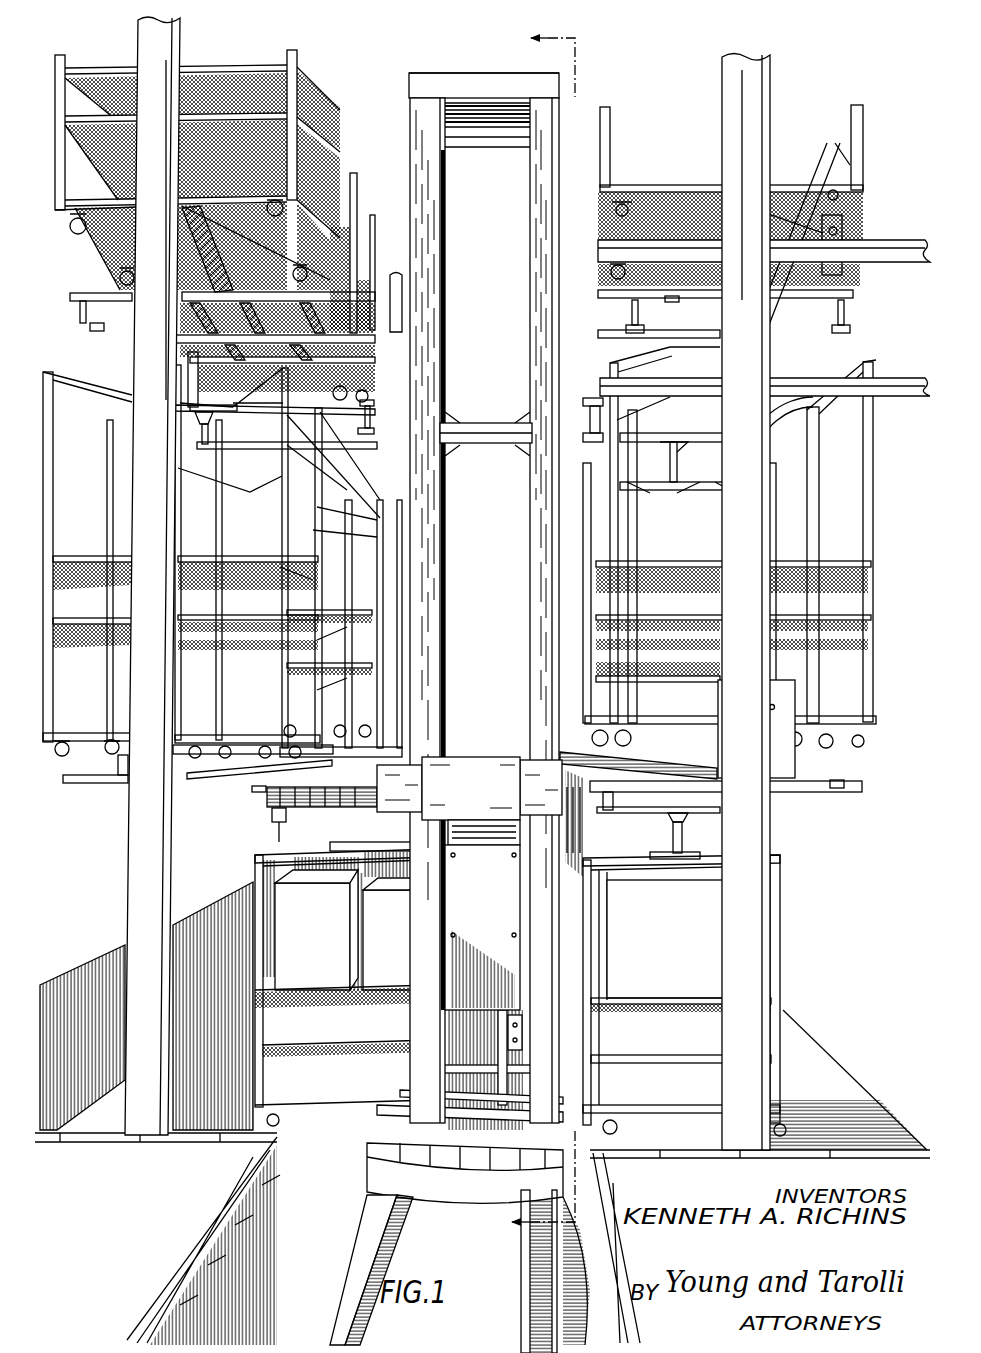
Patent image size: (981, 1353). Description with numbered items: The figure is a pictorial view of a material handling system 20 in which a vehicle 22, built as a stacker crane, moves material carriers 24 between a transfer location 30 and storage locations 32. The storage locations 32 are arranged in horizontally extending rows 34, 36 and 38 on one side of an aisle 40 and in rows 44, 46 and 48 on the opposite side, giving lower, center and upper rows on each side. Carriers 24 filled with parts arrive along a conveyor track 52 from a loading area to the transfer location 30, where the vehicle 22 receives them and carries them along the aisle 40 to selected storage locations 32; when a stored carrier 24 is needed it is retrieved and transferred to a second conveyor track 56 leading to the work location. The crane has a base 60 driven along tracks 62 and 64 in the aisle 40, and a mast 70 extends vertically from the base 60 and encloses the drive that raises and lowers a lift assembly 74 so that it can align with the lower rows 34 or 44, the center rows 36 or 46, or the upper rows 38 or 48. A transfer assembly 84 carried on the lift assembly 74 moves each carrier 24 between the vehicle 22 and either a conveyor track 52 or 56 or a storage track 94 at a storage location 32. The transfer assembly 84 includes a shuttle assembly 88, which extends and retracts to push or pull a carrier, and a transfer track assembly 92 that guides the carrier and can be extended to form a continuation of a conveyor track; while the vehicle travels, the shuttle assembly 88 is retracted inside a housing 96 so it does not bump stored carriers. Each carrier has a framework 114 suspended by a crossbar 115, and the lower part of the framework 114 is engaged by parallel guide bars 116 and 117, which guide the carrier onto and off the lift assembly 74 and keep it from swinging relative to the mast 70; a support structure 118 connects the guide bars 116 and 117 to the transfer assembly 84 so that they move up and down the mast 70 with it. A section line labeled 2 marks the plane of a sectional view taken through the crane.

The section line 2- 2 is at (530, 629).
The material handling system 20 is at (163, 1200).
The vehicle 22 is at (565, 115).
The material carriers 24 is at (612, 152).
The transfer location 30 is at (565, 1272).
The storage locations 32 is at (268, 42).
The lower row 34 is at (105, 860).
The center row 36 is at (65, 345).
The upper row 38 is at (125, 60).
The aisle 40 is at (392, 100).
The lower row 44 is at (820, 822).
The center row 46 is at (890, 625).
The upper row 48 is at (885, 110).
The conveyor track 52 is at (878, 245).
The conveyor track 56 is at (694, 356).
The base 60 is at (457, 1185).
The track 62 is at (293, 1343).
The track 64 is at (532, 1268).
The mast 70 is at (428, 242).
The lift assembly 74 is at (480, 740).
The transfer assembly 84 is at (470, 826).
The shuttle assembly 88 is at (268, 808).
The transfer track assembly 92 is at (332, 760).
The storage track 94 is at (125, 297).
The housing 96 is at (486, 800).
The carrier framework 114 is at (253, 878).
The crossbar 115 is at (283, 815).
The guide bar 116 is at (545, 1063).
The guide bar 117 is at (548, 1107).
The support structure 118 is at (500, 935).